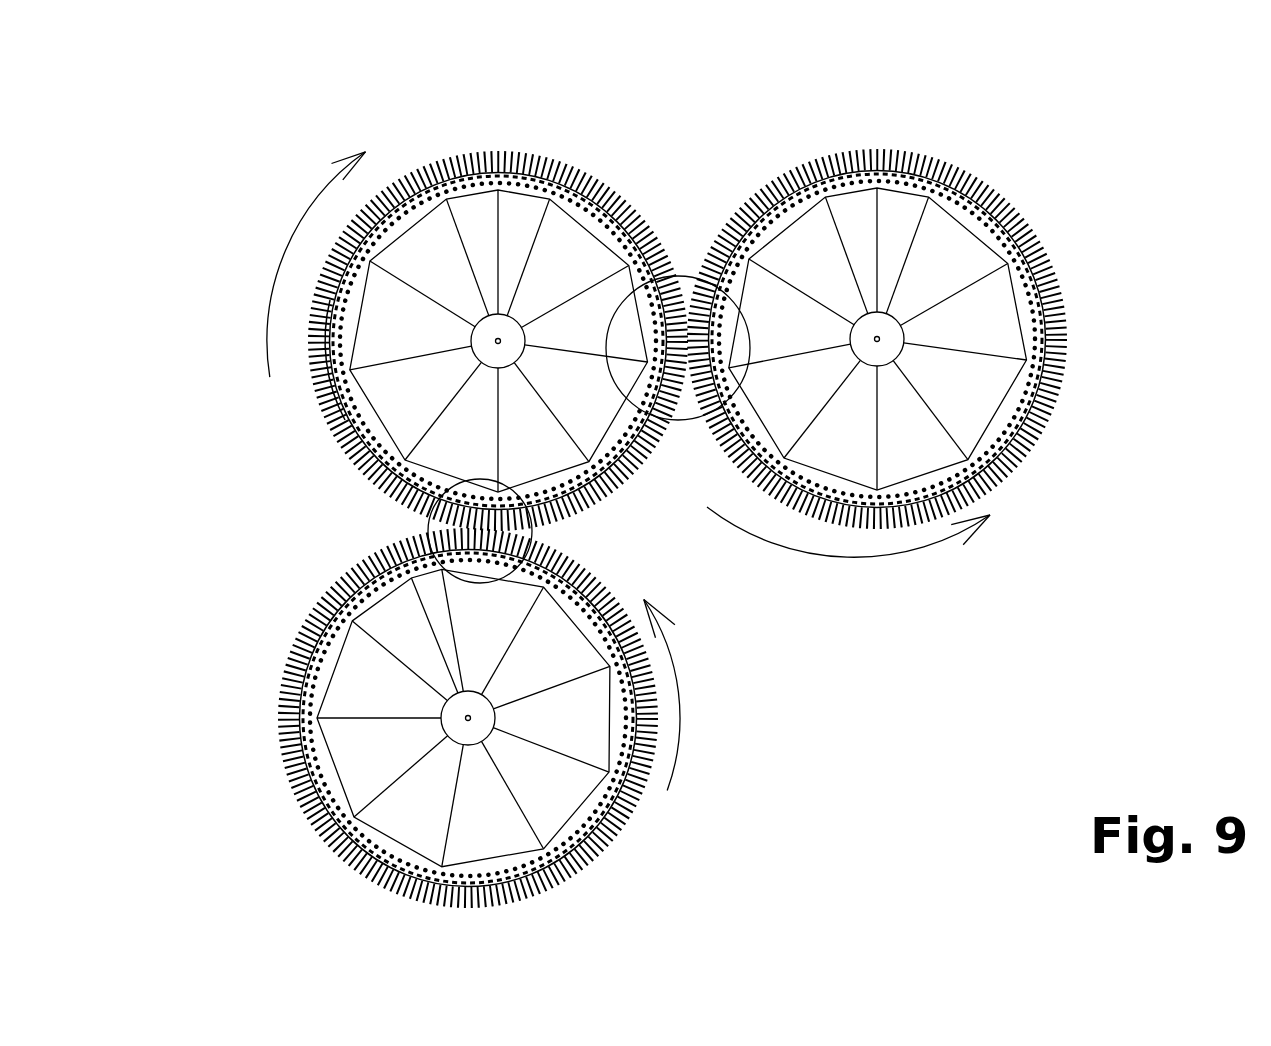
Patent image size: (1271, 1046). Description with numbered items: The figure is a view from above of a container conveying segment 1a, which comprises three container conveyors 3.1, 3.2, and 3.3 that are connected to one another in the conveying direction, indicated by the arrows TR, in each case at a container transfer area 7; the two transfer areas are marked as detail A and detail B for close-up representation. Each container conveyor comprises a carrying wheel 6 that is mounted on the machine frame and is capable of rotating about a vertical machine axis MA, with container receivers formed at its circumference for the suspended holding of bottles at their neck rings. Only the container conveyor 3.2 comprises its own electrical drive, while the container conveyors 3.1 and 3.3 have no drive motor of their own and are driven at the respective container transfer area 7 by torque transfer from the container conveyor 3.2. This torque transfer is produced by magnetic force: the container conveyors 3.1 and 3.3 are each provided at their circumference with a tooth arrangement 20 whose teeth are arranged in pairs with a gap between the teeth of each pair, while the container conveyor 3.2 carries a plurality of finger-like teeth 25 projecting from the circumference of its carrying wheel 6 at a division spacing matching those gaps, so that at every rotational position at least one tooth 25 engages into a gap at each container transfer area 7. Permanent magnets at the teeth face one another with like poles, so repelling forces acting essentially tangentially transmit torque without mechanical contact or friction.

The container conveying segment 1a is at (678, 501).
The container conveyor 3.1 is at (268, 730).
The container conveyor 3.2 is at (315, 447).
The container conveyor 3.3 is at (1053, 433).
The carrying wheel 6 is at (533, 197).
The container transfer area 7 is at (553, 528).
The tooth arrangement 20 is at (1060, 371).
The finger-like teeth 25 is at (322, 410).
The machine axis MA is at (497, 340).
The conveying direction TR is at (609, 471).
The detail A is at (426, 523).
The detail B is at (692, 277).